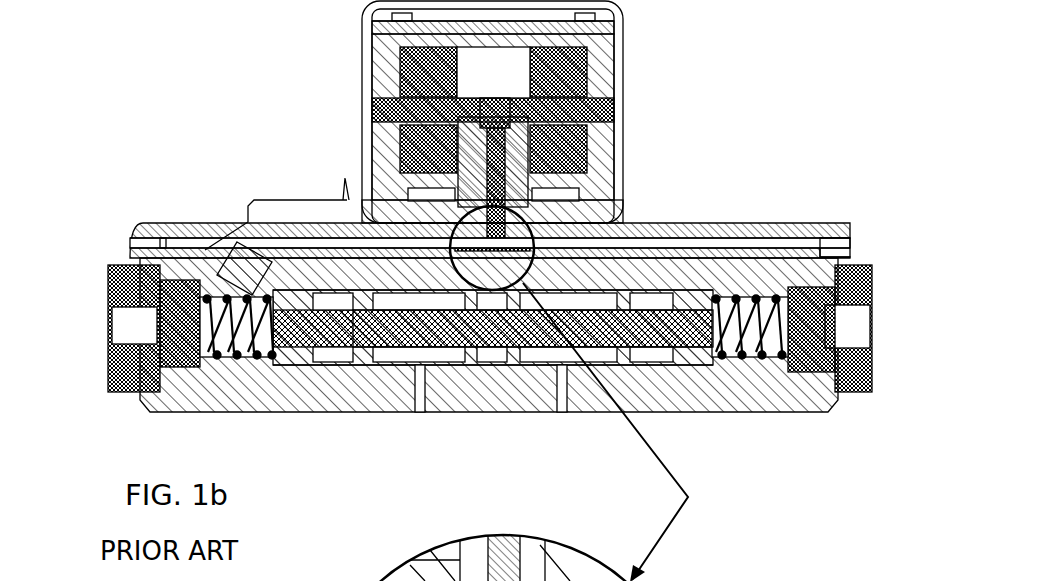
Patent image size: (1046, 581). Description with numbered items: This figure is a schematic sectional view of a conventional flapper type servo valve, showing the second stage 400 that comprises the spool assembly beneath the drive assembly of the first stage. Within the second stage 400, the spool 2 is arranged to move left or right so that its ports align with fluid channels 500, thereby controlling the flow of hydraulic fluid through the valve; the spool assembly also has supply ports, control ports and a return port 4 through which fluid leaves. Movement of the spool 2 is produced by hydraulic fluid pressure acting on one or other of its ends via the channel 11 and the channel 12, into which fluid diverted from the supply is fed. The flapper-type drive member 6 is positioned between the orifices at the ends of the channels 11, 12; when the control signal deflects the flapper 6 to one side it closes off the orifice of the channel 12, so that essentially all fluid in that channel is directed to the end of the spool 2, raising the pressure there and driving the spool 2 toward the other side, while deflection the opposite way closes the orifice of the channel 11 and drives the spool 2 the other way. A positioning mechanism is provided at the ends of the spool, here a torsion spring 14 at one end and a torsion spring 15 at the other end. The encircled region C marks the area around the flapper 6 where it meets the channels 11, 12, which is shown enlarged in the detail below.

The second stage 400 is at (106, 207).
The channel / cavity C is at (205, 297).
The channel 11 is at (383, 245).
The flapper-type drive member 6 is at (571, 174).
The channel 12 is at (690, 236).
The spool 2 is at (683, 320).
The torsion spring 14 is at (233, 328).
The return port 4 is at (418, 392).
The fluid channels 500 is at (428, 298).
The torsion spring 15 is at (757, 345).